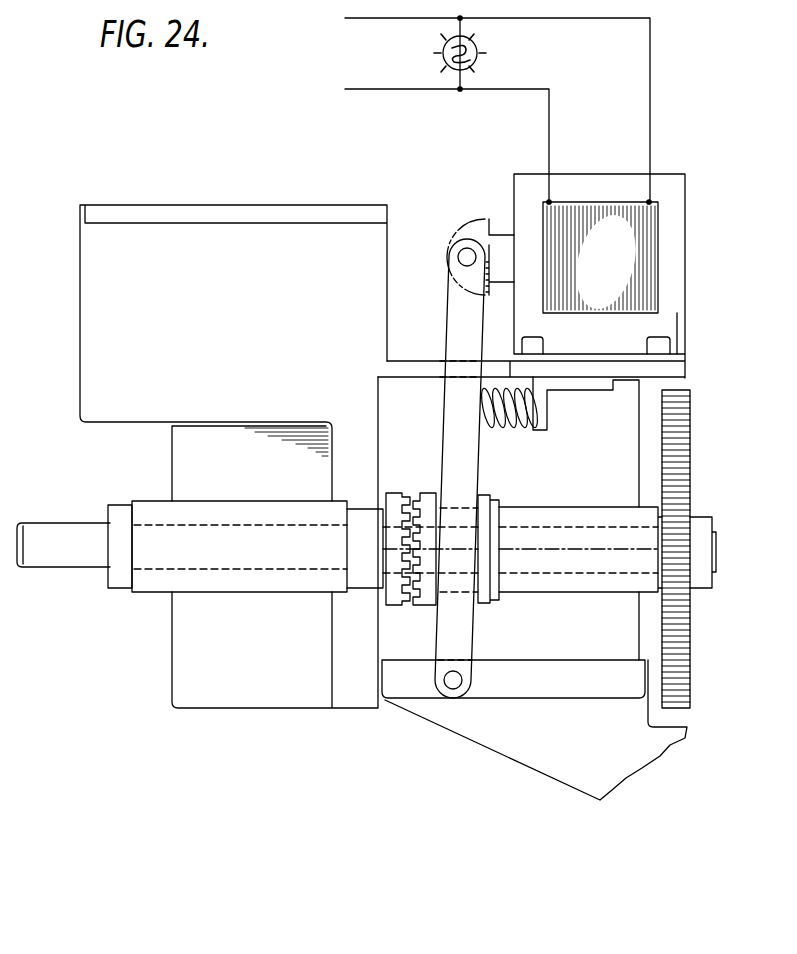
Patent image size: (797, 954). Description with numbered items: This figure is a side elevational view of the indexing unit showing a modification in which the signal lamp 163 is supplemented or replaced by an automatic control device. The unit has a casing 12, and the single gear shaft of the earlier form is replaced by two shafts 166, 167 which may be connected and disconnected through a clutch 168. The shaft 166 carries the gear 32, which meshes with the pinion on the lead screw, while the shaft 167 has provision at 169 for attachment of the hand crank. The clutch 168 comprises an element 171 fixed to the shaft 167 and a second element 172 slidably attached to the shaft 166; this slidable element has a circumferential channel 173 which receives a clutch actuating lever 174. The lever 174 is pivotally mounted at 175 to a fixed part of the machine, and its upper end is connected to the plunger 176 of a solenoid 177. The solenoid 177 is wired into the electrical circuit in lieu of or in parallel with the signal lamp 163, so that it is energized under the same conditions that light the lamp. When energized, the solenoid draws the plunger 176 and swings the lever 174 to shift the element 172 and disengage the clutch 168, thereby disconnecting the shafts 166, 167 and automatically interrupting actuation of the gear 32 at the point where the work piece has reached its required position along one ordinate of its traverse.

The casing 12 is at (242, 318).
The gear 32 is at (692, 432).
The signal lamp 163 is at (478, 50).
The shaft 166 is at (567, 573).
The shaft 167 is at (160, 572).
The clutch 168 is at (385, 560).
The crank attachment provision 169 is at (40, 533).
The clutch element 171 is at (396, 606).
The clutch element 172 is at (424, 608).
The circumferential channel 173 is at (480, 606).
The clutch actuating lever 174 is at (453, 310).
The pivot 175 is at (452, 690).
The plunger 176 is at (470, 232).
The solenoid 177 is at (588, 208).